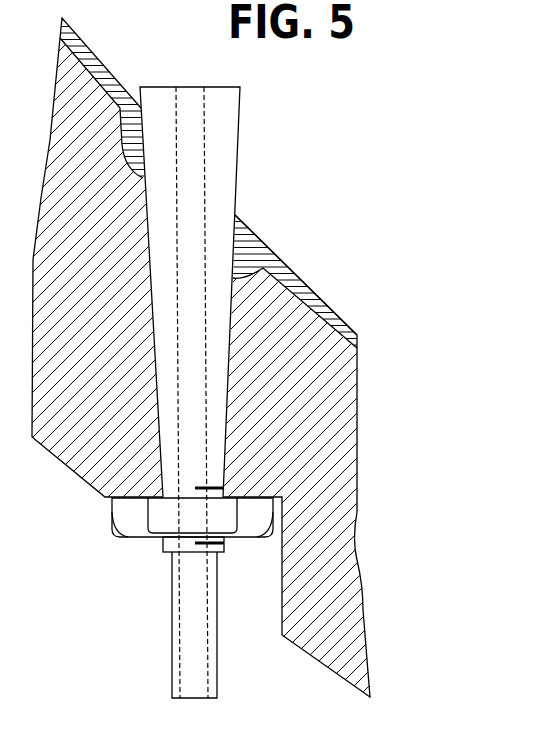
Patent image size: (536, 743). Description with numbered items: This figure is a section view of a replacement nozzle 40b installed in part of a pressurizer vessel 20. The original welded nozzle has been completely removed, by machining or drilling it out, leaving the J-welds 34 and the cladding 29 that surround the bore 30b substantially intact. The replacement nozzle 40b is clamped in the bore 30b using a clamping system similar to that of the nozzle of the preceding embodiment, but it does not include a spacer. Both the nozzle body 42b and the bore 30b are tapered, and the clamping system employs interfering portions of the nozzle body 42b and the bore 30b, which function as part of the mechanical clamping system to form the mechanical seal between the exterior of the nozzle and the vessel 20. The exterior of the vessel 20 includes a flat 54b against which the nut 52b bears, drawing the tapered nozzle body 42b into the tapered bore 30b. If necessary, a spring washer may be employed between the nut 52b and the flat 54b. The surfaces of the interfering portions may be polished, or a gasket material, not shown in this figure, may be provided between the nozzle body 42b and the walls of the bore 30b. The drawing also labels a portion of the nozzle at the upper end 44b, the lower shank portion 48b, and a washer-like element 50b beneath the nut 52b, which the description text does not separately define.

The vessel 20 is at (324, 395).
The cladding 29 is at (295, 288).
The bore 30b is at (233, 307).
The J-welds 34 is at (253, 252).
The replacement nozzle 40b is at (252, 196).
The nozzle body 42b is at (163, 238).
The bolt head 44b is at (159, 103).
The threaded shank 48b is at (173, 662).
The washer 50b is at (163, 548).
The nut 52b is at (124, 500).
The flat 54b is at (127, 523).